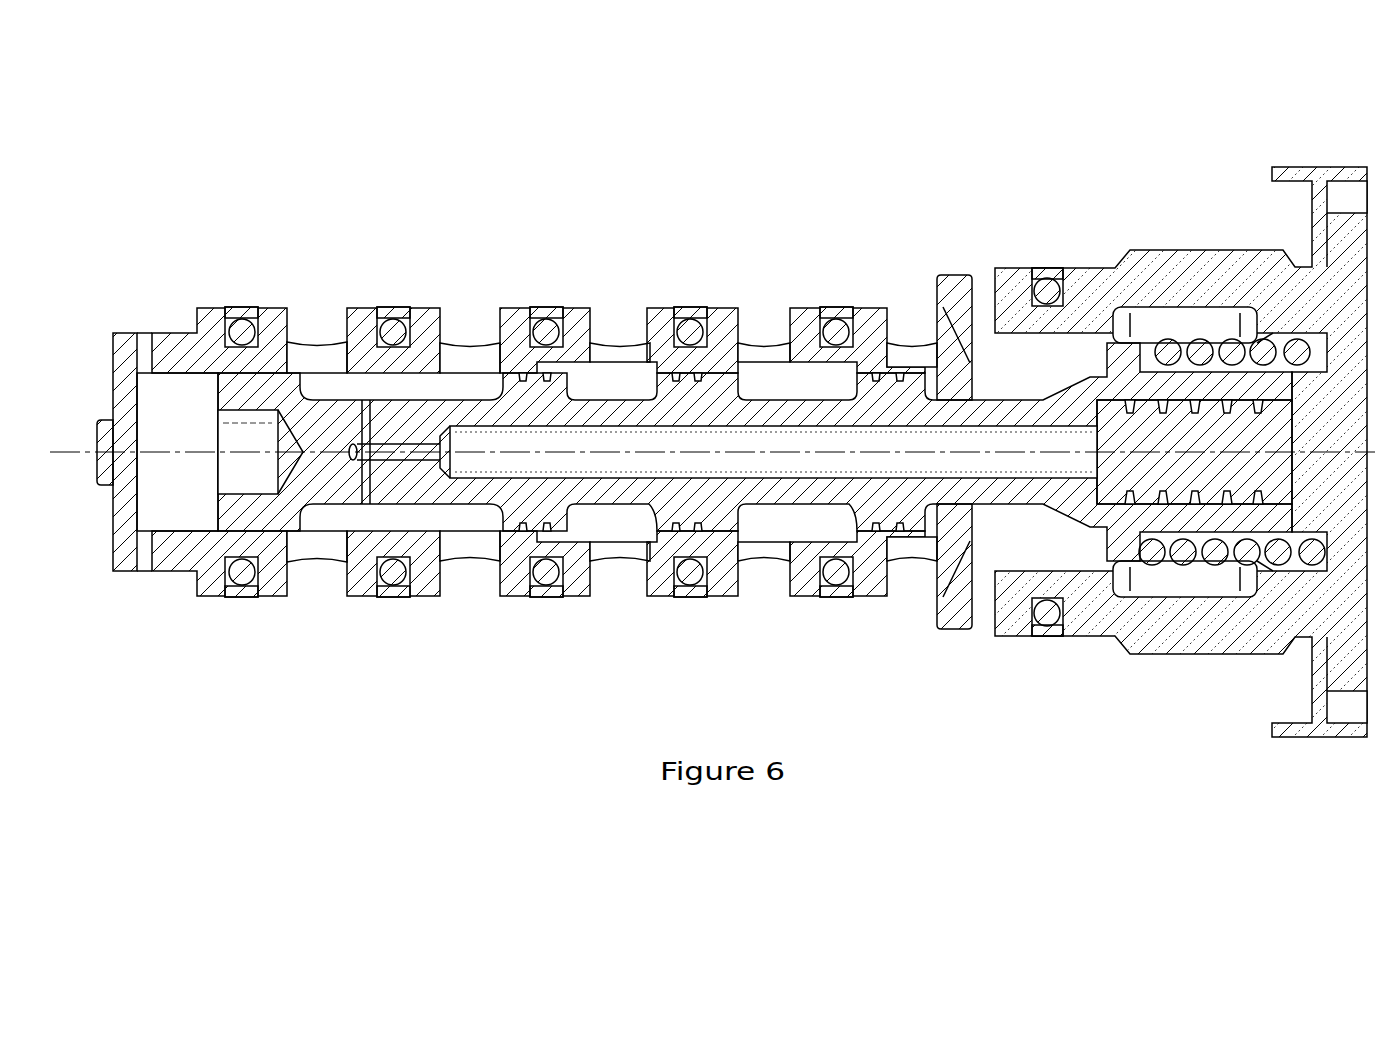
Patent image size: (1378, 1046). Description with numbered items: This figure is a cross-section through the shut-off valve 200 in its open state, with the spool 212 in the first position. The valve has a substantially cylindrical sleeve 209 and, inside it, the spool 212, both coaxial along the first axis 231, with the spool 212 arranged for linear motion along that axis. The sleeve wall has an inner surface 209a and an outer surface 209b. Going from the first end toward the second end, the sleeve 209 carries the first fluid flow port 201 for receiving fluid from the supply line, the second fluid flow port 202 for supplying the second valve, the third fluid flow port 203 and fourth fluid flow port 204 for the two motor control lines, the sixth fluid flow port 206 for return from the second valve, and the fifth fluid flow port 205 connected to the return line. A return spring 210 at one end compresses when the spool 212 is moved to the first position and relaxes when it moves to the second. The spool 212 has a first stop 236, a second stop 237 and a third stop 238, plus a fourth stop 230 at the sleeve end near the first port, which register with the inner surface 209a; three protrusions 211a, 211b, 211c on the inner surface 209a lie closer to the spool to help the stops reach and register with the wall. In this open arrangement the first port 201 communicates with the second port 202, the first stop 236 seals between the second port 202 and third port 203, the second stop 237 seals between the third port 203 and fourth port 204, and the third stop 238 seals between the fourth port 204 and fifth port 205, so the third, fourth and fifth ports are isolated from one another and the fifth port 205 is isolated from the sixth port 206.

The shut-off valve 200 is at (246, 198).
The first fluid flow port 201 is at (314, 340).
The second fluid flow port 202 is at (468, 340).
The third fluid flow port 203 is at (606, 340).
The fourth fluid flow port 204 is at (763, 340).
The fifth fluid flow port 205 is at (988, 278).
The sixth fluid flow port 206 is at (926, 340).
The sleeve 209 is at (177, 342).
The inner surface of the sleeve wall 209a is at (362, 388).
The outer surface of the sleeve wall 209b is at (208, 333).
The return spring 210 is at (1211, 553).
The first protrusion 211a is at (515, 358).
The second protrusion 211b is at (664, 388).
The third protrusion 211c is at (868, 388).
The spool 212 is at (331, 482).
The fourth stop 230 is at (243, 383).
The first axis 231 is at (1021, 452).
The first stop 236 is at (562, 388).
The second stop 237 is at (703, 400).
The third stop 238 is at (893, 385).